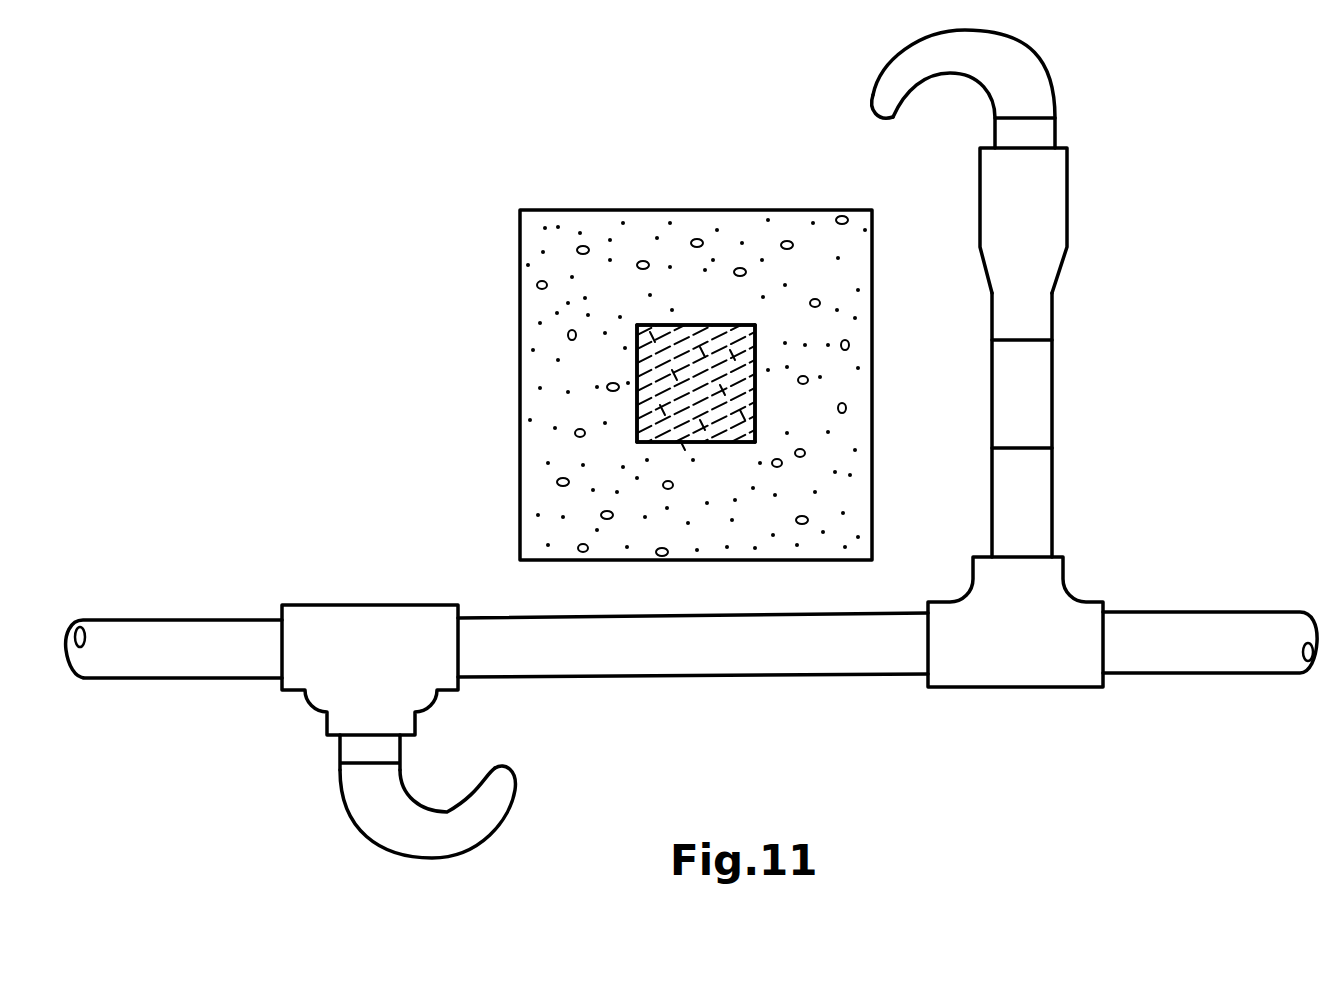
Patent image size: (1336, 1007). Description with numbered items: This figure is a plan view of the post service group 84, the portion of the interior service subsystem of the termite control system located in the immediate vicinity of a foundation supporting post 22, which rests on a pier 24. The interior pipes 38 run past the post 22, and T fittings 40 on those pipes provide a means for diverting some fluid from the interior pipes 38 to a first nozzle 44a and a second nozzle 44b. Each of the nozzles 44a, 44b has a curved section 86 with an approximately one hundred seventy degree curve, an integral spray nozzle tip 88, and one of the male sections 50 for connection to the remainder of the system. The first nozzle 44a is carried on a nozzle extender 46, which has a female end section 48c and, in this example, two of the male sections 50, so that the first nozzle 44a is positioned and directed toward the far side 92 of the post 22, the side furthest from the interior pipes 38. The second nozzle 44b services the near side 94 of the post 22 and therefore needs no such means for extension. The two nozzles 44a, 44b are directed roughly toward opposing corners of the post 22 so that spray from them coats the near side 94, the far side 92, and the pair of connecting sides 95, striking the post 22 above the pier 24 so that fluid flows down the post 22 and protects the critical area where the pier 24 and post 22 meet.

The post service group 84 is at (340, 169).
The pier 24 is at (518, 232).
The foundation supporting post 22 is at (645, 325).
The far side 92 is at (725, 310).
The near side 94 is at (710, 442).
The connecting sides 95 is at (637, 365).
The interior pipes 38 is at (197, 635).
The T fittings 40 is at (392, 623).
The first nozzle 44a is at (793, 420).
The second nozzle 44b is at (365, 795).
The curved section 86 is at (1040, 78).
The spray nozzle tip 88 is at (882, 113).
The male sections 50 is at (1043, 138).
The female end section 48c is at (1053, 230).
The nozzle extender 46 is at (1042, 383).